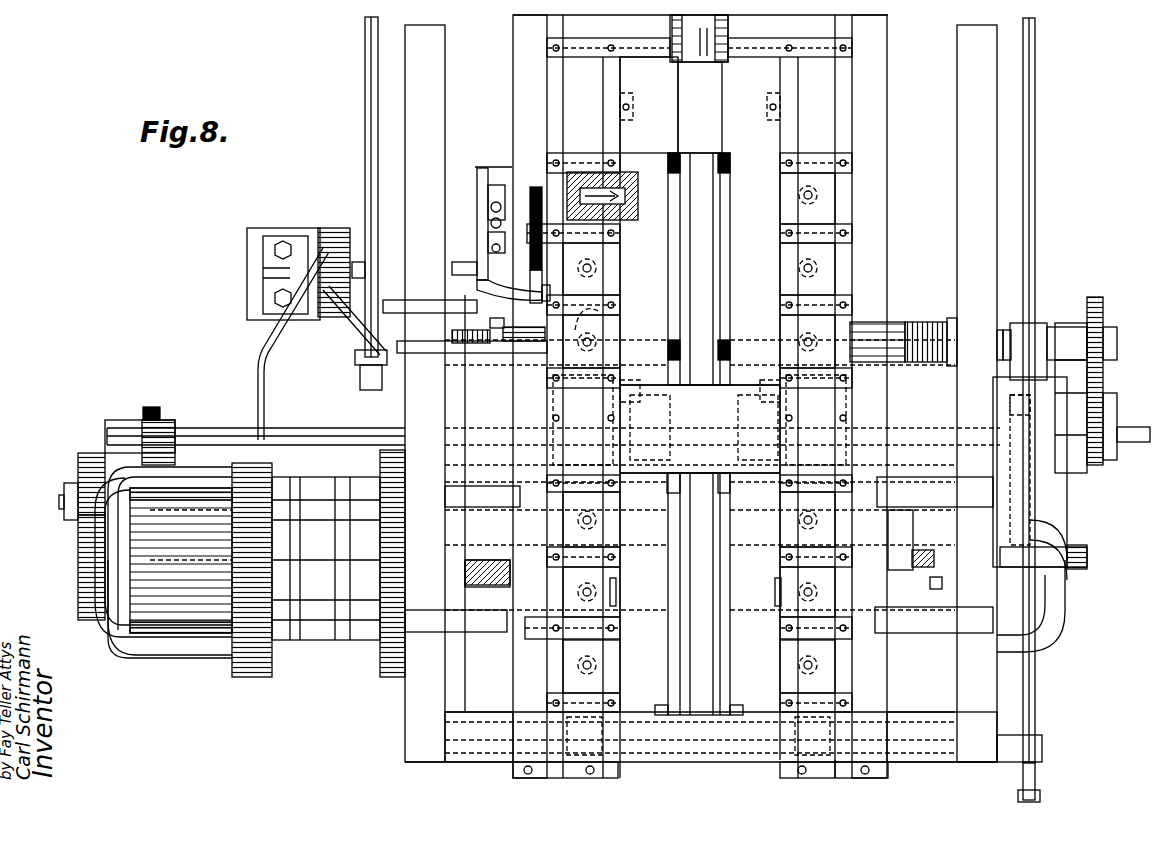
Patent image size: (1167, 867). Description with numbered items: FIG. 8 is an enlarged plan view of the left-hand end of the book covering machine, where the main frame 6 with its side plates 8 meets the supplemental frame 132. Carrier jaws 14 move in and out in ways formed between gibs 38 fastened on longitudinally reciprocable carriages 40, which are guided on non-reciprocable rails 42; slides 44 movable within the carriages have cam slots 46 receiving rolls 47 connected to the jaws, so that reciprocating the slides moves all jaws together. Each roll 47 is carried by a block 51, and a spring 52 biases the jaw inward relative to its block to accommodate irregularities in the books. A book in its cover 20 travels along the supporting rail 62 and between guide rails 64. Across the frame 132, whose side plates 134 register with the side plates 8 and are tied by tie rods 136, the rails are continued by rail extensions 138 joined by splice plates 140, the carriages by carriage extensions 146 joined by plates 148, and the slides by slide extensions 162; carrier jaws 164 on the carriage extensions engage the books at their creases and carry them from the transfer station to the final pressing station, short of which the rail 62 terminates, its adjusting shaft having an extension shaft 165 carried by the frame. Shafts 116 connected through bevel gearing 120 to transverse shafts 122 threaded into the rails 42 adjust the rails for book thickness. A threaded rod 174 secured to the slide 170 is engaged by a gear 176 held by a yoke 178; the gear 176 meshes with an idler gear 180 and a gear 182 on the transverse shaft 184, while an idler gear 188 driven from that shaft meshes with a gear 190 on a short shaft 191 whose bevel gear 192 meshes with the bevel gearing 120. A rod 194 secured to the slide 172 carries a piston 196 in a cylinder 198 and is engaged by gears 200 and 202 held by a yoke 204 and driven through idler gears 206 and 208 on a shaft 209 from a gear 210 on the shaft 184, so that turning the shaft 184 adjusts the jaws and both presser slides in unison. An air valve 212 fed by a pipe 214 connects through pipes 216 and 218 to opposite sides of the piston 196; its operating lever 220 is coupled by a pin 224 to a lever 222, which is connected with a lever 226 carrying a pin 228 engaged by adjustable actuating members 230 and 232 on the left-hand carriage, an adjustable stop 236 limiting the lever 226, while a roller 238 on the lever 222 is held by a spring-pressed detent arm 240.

The main frame 6 is at (1010, 281).
The side plates 8 is at (407, 92).
The carrier jaws 14 is at (670, 35).
The cover 20 is at (713, 46).
The gibs 38 is at (590, 58).
The carriages 40 is at (555, 93).
The rails 42 is at (520, 53).
The slides 44 is at (575, 117).
The cam slots 46 is at (566, 160).
The pins or rolls 47 is at (565, 181).
The block 51 is at (598, 178).
The spring 52 is at (614, 186).
The supporting rail 62 is at (692, 80).
The guide rails 64 is at (742, 92).
The shafts 116 is at (365, 79).
The bevel gearing 120 is at (355, 356).
The transverse shafts 122 is at (918, 313).
The supplemental frame 132 is at (420, 699).
The side plates 134 is at (432, 664).
The tie rods 136 is at (480, 490).
The rail extensions 138 is at (520, 686).
The splice plates 140 is at (615, 391).
The carriage extensions 146 is at (550, 519).
The plates 148 is at (547, 408).
The slide extensions 162 is at (612, 591).
The carrier jaws 164 is at (668, 476).
The extension shaft 165 is at (1035, 701).
The slide 170 is at (920, 589).
The slide 172 is at (480, 586).
The threaded rod 174 is at (1075, 554).
The gear 176 is at (1000, 596).
The yoke 178 is at (1040, 599).
The idler gear 180 is at (1015, 522).
The gear 182 is at (1010, 411).
The transverse shaft 184 is at (320, 426).
The idler gear 188 is at (1100, 387).
The gear 190 is at (1100, 299).
The short transverse shaft 191 is at (1067, 329).
The bevel gear 192 is at (1040, 324).
The rod 194 is at (72, 578).
The piston 196 is at (320, 500).
The cylinder 198 is at (297, 658).
The gear 200 is at (230, 601).
The gear 202 is at (100, 632).
The yoke 204 is at (135, 657).
The idler gear 206 is at (175, 454).
The idler gear 208 is at (80, 453).
The short transverse shaft 209 is at (62, 492).
The gear 210 is at (152, 405).
The air valve 212 is at (332, 228).
The pipe 214 is at (330, 271).
The pipe 216 is at (270, 344).
The pipe 218 is at (332, 316).
The operating lever 220 is at (465, 300).
The lever 222 is at (490, 322).
The transverse pin 224 is at (452, 335).
The lever 226 is at (605, 311).
The pin 228 is at (524, 330).
The actuating member 230 is at (580, 291).
The actuating member 232 is at (487, 572).
The adjustable stop 236 is at (480, 245).
The roller 238 is at (458, 278).
The detent arm 240 is at (478, 214).